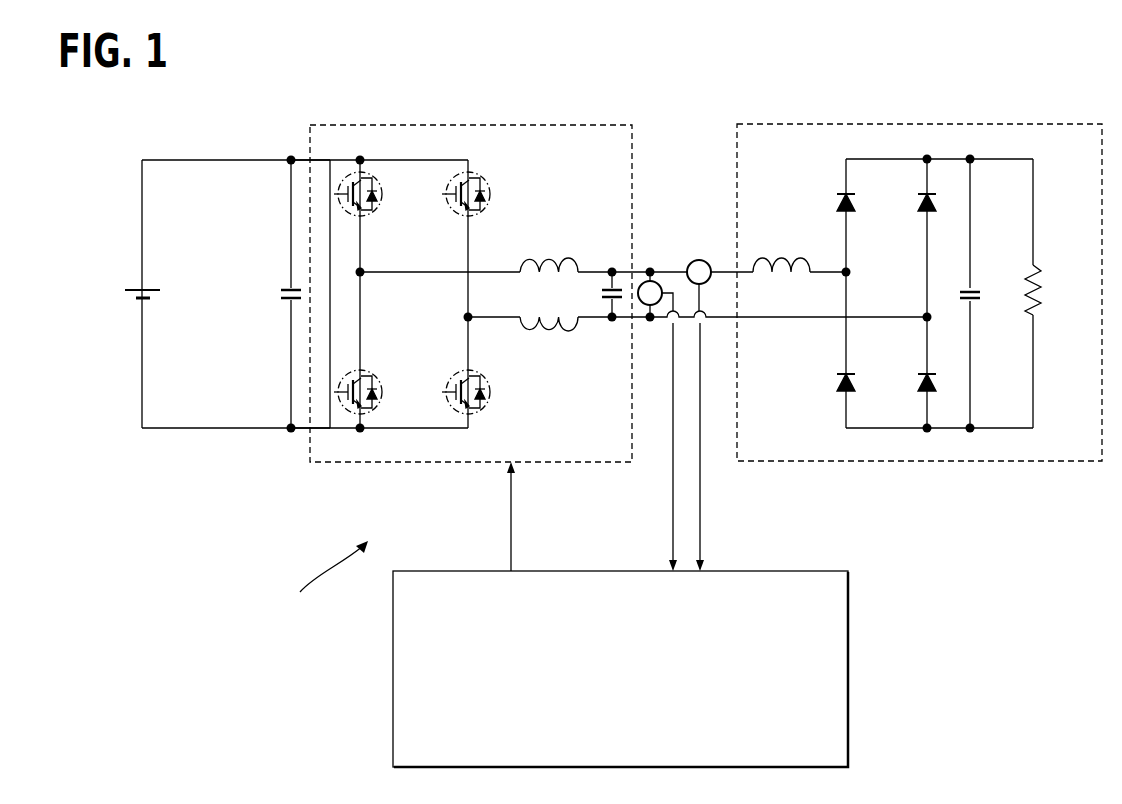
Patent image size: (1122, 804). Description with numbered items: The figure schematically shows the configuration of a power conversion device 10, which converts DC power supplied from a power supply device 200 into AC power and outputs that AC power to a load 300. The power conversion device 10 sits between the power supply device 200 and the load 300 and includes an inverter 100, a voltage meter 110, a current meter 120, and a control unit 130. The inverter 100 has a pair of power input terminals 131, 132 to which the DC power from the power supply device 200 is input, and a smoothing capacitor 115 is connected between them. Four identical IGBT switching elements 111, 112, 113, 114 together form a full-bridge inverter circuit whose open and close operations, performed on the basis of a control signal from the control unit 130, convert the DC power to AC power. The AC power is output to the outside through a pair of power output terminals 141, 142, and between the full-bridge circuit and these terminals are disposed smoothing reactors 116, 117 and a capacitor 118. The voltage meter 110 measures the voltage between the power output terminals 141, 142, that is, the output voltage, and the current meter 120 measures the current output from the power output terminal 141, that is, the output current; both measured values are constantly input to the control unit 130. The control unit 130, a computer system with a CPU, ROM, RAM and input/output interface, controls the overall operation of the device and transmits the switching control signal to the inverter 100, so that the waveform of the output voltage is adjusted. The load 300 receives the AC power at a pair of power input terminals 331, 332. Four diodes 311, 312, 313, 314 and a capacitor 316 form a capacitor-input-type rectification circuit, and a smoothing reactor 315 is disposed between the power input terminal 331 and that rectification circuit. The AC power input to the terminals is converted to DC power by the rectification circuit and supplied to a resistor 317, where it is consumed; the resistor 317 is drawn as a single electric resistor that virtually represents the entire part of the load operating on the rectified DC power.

The power conversion device 10 is at (326, 578).
The inverter 100 is at (528, 124).
The voltage meter 110 is at (654, 281).
The switching element 111 is at (371, 208).
The switching element 112 is at (490, 200).
The switching element 113 is at (371, 377).
The switching element 114 is at (490, 383).
The smoothing capacitor 115 is at (287, 300).
The smoothing reactor 116 is at (557, 257).
The smoothing reactor 117 is at (560, 331).
The capacitor 118 is at (605, 289).
The current meter 120 is at (700, 260).
The control unit 130 is at (848, 645).
The power input terminal 131 is at (308, 158).
The power input terminal 132 is at (309, 431).
The power output terminal 141 is at (636, 271).
The power output terminal 142 is at (633, 319).
The power supply device 200 is at (137, 289).
The load 300 is at (1003, 124).
The diode 311 is at (855, 195).
The diode 312 is at (936, 195).
The diode 313 is at (855, 385).
The diode 314 is at (937, 385).
The smoothing reactor 315 is at (770, 258).
The capacitor 316 is at (977, 300).
The resistor 317 is at (1041, 277).
The power input terminal 331 is at (735, 272).
The power input terminal 332 is at (737, 319).